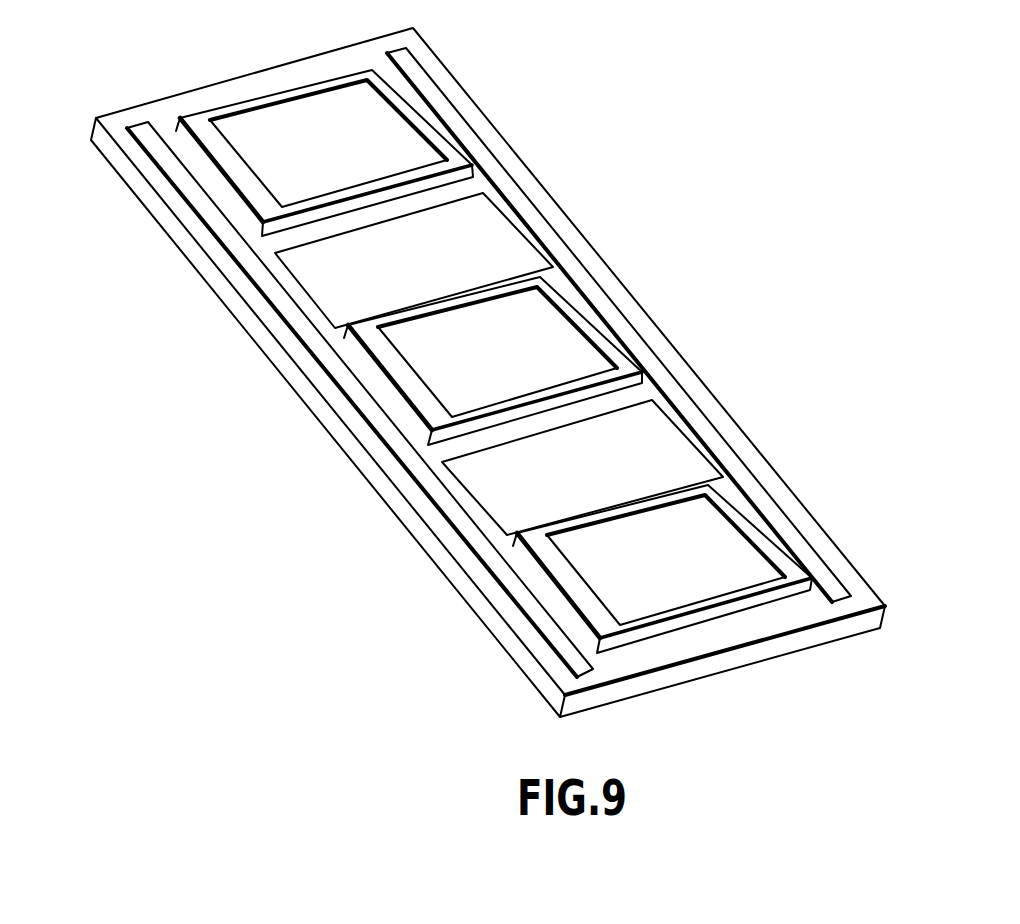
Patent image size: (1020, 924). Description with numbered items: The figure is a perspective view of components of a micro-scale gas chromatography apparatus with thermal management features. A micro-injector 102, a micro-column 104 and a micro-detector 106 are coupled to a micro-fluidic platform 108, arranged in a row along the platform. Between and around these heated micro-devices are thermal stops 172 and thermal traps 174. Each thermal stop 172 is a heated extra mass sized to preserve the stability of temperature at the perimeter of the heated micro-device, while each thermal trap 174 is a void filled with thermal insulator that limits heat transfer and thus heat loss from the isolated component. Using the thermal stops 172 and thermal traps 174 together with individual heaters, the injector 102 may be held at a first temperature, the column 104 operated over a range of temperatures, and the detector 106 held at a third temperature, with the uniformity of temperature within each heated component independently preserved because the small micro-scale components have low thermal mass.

The micro-injector 102 is at (330, 100).
The micro-column 104 is at (582, 365).
The micro-detector 106 is at (753, 578).
The micro-fluidic platform 108 is at (120, 167).
The thermal stop 172 is at (432, 128).
The thermal trap 174 is at (300, 272).